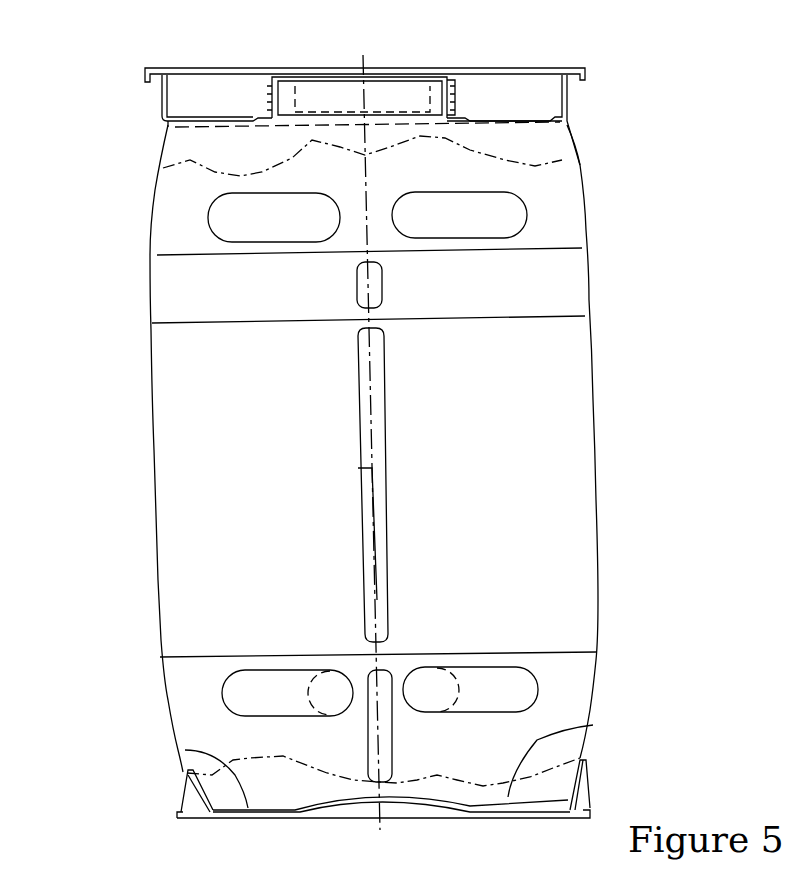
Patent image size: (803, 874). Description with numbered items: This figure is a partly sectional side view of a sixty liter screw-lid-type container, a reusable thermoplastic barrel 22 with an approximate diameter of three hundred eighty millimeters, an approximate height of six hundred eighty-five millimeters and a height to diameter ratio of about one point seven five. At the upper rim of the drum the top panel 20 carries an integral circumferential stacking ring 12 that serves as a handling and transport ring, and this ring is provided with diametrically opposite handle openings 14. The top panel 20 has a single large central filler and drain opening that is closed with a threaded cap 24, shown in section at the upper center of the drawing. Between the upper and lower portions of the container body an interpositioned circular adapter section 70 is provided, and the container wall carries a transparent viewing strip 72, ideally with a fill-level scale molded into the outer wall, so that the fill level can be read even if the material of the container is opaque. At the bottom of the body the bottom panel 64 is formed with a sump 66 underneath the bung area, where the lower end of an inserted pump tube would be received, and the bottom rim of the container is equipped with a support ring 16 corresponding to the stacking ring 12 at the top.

The stacking ring 12 is at (585, 76).
The handle openings 14 is at (312, 93).
The support ring 16 is at (588, 808).
The top panel 20 is at (227, 118).
The screw-lid-type barrel 22 is at (490, 538).
The threaded cap 24 is at (462, 102).
The bottom panel 64 is at (593, 725).
The sump 66 is at (185, 750).
The circular adapter section 70 is at (535, 283).
The transparent viewing strip 72 is at (375, 375).